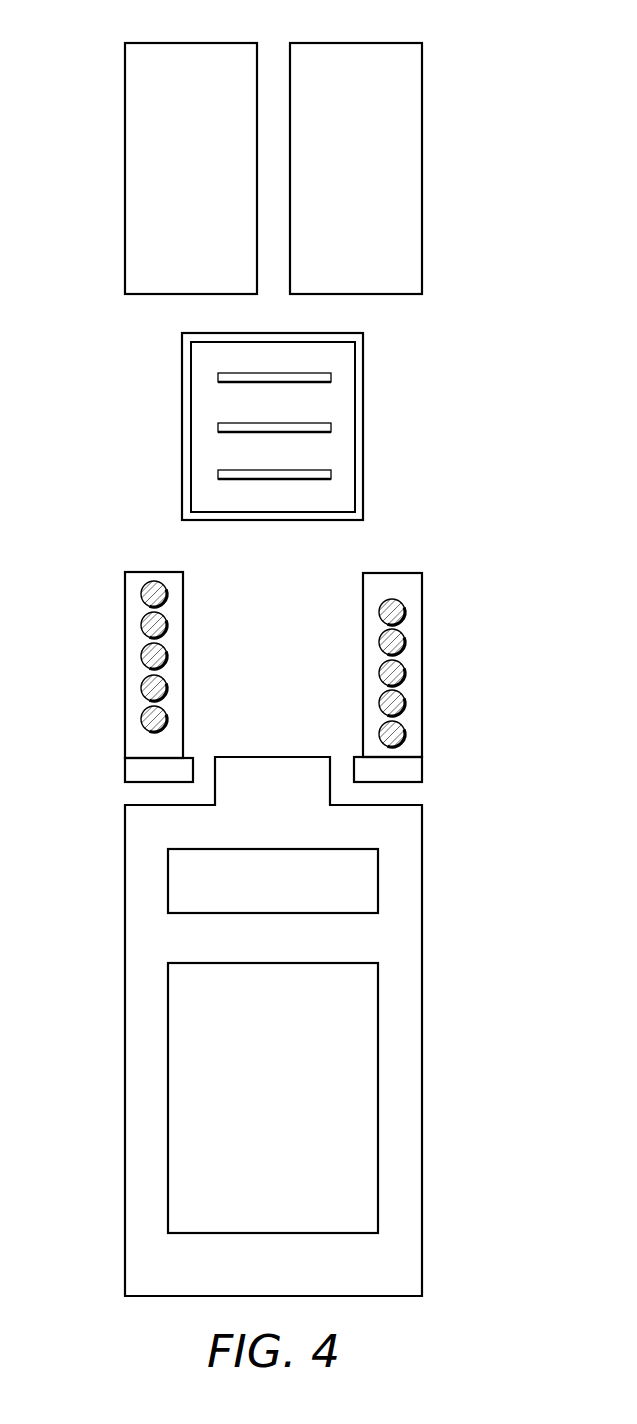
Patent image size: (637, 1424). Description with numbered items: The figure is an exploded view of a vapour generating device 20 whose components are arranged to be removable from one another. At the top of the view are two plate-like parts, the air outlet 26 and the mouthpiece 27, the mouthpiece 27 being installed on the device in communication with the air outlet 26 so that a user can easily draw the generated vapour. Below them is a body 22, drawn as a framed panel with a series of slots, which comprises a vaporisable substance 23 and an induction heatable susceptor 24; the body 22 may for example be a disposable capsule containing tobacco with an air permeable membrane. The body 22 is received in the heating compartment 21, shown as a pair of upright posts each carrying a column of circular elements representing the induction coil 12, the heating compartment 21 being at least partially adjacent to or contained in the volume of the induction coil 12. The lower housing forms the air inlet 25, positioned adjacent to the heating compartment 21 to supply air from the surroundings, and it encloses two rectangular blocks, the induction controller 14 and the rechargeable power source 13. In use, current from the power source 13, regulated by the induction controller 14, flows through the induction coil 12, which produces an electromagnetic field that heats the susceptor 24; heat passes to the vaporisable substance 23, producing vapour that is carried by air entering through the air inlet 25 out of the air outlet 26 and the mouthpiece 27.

The vapour generating device 20 is at (108, 46).
The air outlet 26 is at (273, 50).
The mouthpiece 27 is at (422, 52).
The body 22 is at (363, 345).
The vaporisable substance 23 is at (340, 496).
The induction heatable susceptor 24 is at (218, 424).
The heating compartment 21 is at (208, 578).
The induction coil 12 is at (405, 673).
The air inlet 25 is at (133, 792).
The induction controller 14 is at (378, 858).
The rechargeable power source 13 is at (378, 972).